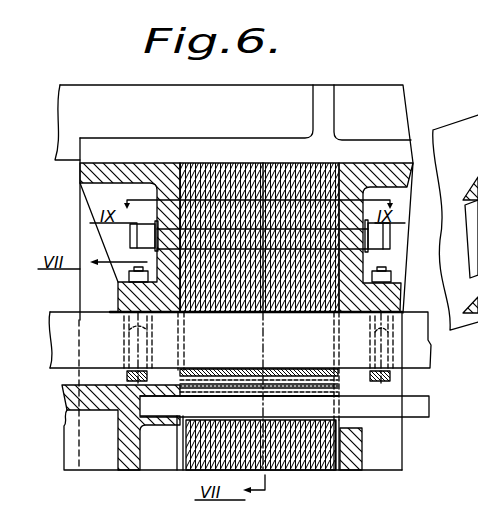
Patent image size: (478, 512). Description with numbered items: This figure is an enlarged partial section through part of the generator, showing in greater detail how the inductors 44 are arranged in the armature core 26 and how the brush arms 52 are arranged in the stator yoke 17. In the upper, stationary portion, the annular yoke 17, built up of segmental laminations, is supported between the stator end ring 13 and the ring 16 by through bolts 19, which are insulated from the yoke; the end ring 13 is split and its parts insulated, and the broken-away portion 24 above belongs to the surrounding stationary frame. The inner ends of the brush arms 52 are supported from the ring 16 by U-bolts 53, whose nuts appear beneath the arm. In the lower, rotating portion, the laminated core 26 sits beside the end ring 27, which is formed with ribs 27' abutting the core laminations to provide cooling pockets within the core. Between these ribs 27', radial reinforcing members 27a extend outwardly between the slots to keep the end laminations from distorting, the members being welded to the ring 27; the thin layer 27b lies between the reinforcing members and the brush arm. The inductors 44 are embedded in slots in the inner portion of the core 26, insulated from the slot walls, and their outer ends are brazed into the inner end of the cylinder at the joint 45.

The upper frame plate 24 is at (367, 92).
The annular yoke 17 is at (270, 163).
The ring 16 is at (100, 171).
The through bolts 19 is at (393, 238).
The stator end ring 13 is at (395, 270).
The brush arms 52 is at (417, 342).
The U-bolts 53 is at (128, 379).
The upper gasket strip 27b is at (180, 373).
The radial reinforcing members 27a is at (338, 388).
The inductors 44 is at (416, 418).
The brazed joint of inductors 45 is at (163, 413).
The laminated core 26 is at (296, 470).
The ribs 27' is at (343, 466).
The end ring 27 is at (367, 449).